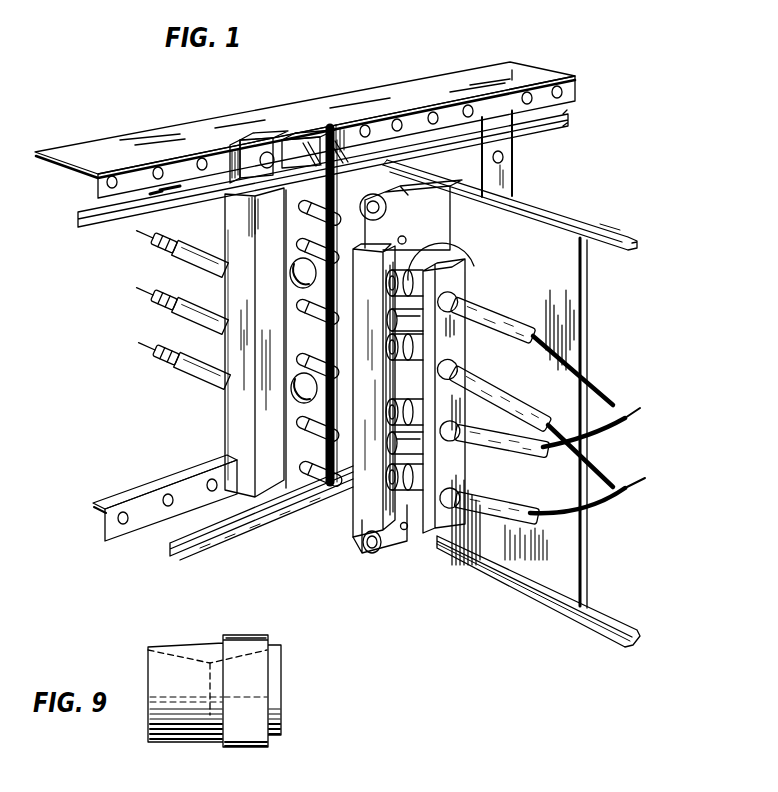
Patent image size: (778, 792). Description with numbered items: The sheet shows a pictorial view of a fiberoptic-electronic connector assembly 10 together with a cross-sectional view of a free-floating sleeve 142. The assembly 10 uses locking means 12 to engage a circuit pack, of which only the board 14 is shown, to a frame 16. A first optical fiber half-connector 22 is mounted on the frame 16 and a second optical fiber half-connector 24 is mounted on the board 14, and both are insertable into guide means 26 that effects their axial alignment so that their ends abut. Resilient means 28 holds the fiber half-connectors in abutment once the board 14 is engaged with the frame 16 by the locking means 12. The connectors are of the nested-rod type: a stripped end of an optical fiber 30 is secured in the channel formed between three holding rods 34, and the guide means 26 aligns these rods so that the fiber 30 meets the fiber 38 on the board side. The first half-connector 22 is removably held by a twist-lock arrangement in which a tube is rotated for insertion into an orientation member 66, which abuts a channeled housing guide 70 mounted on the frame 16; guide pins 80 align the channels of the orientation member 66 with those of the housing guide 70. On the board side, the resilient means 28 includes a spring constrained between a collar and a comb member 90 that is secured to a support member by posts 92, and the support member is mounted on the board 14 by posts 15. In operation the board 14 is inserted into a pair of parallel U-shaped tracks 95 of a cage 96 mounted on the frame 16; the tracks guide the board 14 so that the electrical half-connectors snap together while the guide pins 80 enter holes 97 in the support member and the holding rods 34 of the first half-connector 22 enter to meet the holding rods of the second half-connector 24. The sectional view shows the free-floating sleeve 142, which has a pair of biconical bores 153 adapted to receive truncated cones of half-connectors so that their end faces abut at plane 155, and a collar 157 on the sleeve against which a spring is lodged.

In FIG. 1, the fiberoptic-electronic connector assembly 10 is at (626, 579).
In FIG. 1, the locking means 12 is at (293, 133).
In FIG. 1, the board 14 is at (563, 256).
In FIG. 1, the posts 15 is at (367, 548).
In FIG. 1, the frame 16 is at (90, 147).
In FIG. 1, the first optical fiber half-connector 22 is at (192, 371).
In FIG. 1, the second optical fiber half-connector 24 is at (383, 408).
In FIG. 1, the guide means 26 is at (363, 501).
In FIG. 1, the resilient means 28 is at (447, 268).
In FIG. 1, the optical fiber 30 is at (149, 292).
In FIG. 1, the holding rods 34 is at (321, 360).
In FIG. 1, the optical fiber 38 is at (617, 409).
In FIG. 1, the orientation member 66 is at (270, 437).
In FIG. 1, the housing guide 70 is at (235, 404).
In FIG. 1, the guide pins 80 is at (343, 220).
In FIG. 1, the comb member 90 is at (456, 340).
In FIG. 1, the posts 92 is at (406, 310).
In FIG. 1, the U-shaped tracks 95 is at (520, 585).
In FIG. 1, the cage 96 is at (600, 240).
In FIG. 1, the holes 97 is at (405, 530).
In FIG. 9, the free-floating sleeve 142 is at (262, 690).
In FIG. 9, the biconical bores 153 is at (220, 662).
In FIG. 9, the plane 155 is at (210, 700).
In FIG. 9, the collar 157 is at (243, 636).